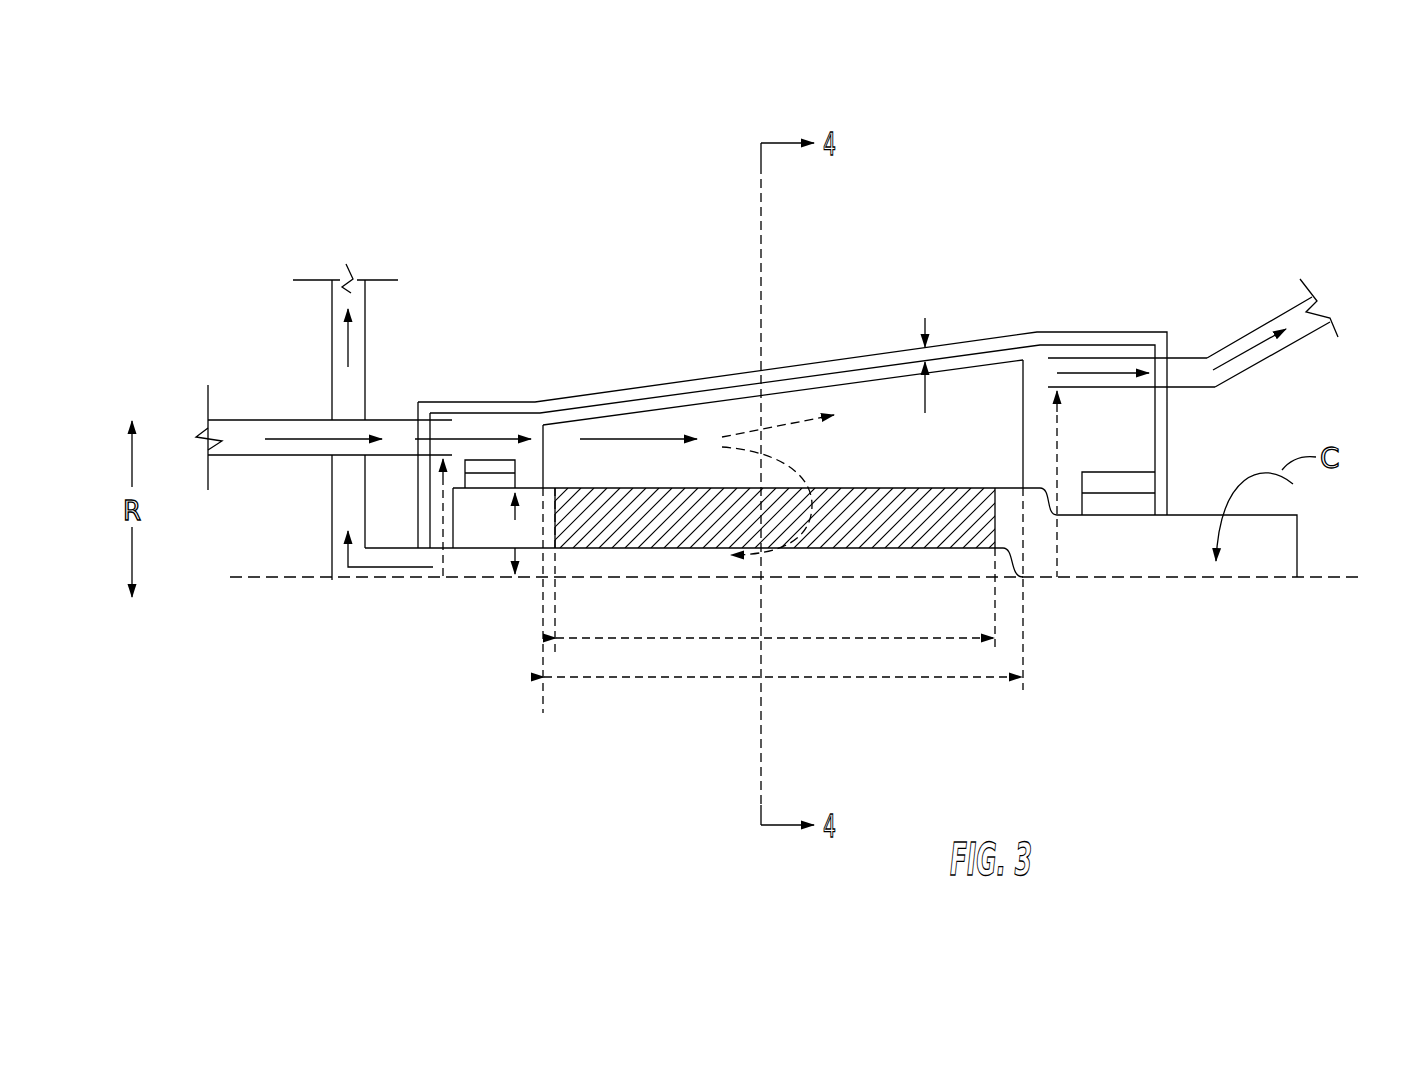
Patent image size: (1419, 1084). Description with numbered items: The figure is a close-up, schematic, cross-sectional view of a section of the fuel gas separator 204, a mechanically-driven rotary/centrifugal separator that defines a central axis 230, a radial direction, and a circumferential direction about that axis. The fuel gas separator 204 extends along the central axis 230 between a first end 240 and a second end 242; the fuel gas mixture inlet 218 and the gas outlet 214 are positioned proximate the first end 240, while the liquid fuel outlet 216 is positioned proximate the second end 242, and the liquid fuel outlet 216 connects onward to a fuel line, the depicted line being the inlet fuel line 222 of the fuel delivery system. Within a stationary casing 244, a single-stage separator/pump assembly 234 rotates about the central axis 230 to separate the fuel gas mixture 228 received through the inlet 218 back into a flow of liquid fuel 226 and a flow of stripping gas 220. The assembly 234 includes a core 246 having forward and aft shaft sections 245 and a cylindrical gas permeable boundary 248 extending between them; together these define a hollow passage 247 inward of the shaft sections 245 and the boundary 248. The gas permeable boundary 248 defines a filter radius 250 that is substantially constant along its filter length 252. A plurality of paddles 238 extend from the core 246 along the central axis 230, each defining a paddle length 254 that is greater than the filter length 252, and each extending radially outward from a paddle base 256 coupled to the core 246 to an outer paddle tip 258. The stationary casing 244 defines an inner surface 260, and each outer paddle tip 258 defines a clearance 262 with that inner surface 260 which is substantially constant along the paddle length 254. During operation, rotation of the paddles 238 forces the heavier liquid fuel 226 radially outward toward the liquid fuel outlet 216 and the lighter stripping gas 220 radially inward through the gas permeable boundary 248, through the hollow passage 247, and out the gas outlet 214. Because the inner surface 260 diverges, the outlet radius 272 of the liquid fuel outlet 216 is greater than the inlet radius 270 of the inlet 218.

The fuel gas separator 204 is at (996, 182).
The gas outlet 214 is at (429, 574).
The liquid fuel outlet 216 is at (1168, 377).
The fuel gas mixture inlet 218 is at (407, 431).
The stripping gas 220 is at (343, 342).
The inlet fuel line 222 is at (1303, 337).
The liquid fuel 226 is at (1233, 360).
The fuel gas mixture 228 is at (470, 434).
The central axis 230 is at (1338, 577).
The single-stage separator/pump assembly 234 is at (780, 379).
The paddles 238 is at (856, 403).
The first end 240 is at (392, 508).
The second end 242 is at (1214, 441).
The stationary casing 244 is at (885, 358).
The forward and aft shaft sections 245 is at (467, 527).
The core 246 is at (572, 469).
The hollow passage 247 is at (594, 556).
The gas permeable boundary 248 is at (832, 525).
The filter radius 250 is at (512, 530).
The filter length 252 is at (680, 638).
The paddle length 254 is at (613, 677).
The paddle base 256 is at (963, 483).
The outer paddle tip 258 is at (989, 367).
The inner surface 260 is at (690, 396).
The clearance 262 is at (925, 323).
The inlet radius 270 is at (443, 495).
The outlet radius 272 is at (1063, 455).